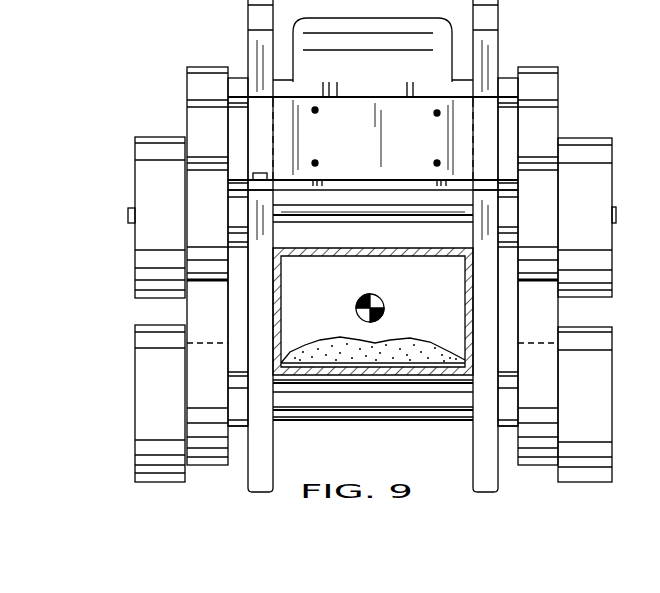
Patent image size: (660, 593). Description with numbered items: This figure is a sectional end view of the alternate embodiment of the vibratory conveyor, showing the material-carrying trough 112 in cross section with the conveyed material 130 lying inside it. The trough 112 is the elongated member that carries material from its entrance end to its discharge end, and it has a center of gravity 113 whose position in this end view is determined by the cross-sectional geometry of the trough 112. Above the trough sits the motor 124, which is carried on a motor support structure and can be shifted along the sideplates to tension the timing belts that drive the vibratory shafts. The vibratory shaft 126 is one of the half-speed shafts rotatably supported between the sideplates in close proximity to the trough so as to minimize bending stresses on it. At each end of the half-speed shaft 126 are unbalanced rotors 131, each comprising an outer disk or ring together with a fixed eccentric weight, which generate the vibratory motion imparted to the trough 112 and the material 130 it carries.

The trough 112 is at (328, 258).
The center of gravity 113 is at (383, 298).
The motor 124 is at (385, 28).
The vibratory shaft 126 is at (370, 213).
The granular load 130 is at (384, 350).
The unbalanced rotor 131 is at (156, 143).